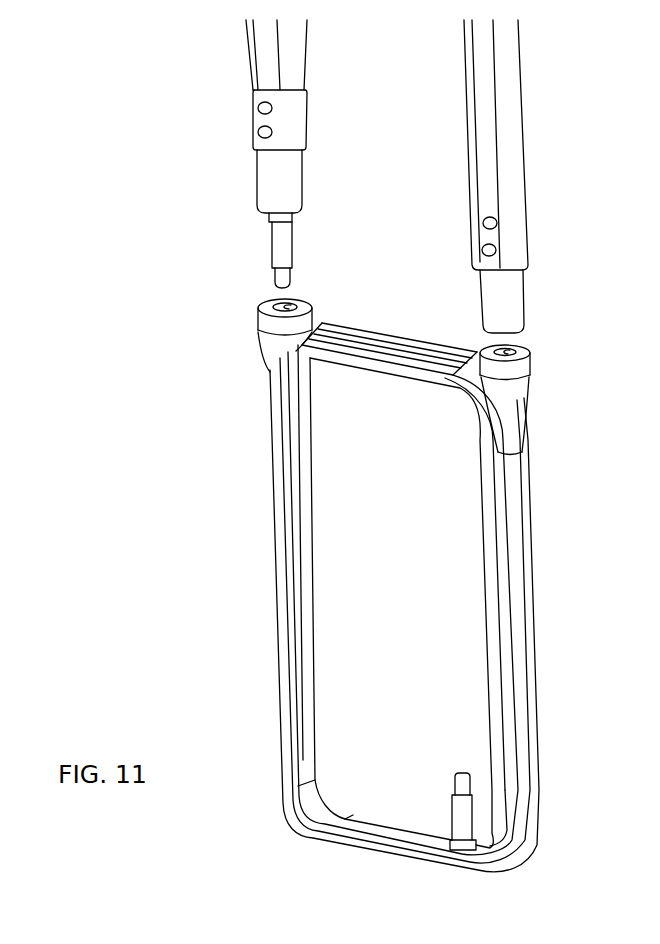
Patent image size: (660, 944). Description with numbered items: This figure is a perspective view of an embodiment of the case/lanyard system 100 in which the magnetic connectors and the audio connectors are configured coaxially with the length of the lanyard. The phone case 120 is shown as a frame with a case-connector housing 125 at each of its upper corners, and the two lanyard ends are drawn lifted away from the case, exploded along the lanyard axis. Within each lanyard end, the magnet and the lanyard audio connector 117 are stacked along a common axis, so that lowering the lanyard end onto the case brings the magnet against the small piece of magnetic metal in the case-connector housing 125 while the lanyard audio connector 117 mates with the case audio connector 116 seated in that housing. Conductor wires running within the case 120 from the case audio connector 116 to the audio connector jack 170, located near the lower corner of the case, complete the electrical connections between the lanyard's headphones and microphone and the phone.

The case/lanyard system 100 is at (373, 322).
The case audio connector 116 is at (293, 304).
The lanyard audio connector 117 is at (281, 250).
The phone case 120 is at (279, 553).
The case-connector housing 125 is at (273, 345).
The headphone and microphone jack 170 is at (468, 813).